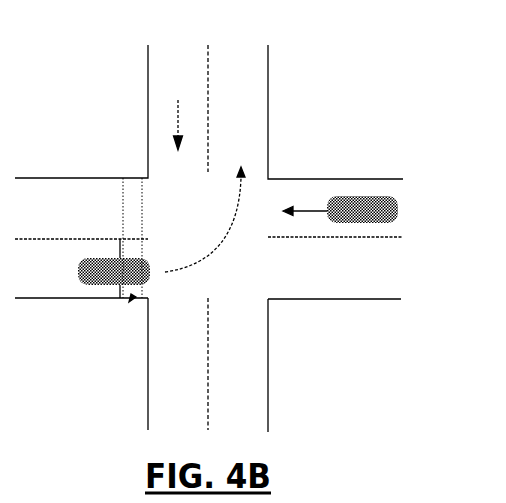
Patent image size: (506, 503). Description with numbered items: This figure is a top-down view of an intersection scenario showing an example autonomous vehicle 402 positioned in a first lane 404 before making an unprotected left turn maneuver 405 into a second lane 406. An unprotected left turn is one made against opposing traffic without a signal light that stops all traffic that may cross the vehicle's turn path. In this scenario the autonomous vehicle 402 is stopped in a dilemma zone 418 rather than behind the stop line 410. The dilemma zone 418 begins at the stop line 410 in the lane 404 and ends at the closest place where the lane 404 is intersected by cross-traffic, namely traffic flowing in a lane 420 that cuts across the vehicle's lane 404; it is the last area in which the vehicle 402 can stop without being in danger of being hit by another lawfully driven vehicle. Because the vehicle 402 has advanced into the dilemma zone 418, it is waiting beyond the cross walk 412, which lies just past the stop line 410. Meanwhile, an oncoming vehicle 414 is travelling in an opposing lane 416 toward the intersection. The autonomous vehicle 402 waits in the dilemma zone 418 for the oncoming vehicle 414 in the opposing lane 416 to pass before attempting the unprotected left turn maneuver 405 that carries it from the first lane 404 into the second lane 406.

The autonomous vehicle 402 is at (86, 258).
The first lane 404 is at (53, 280).
The unprotected left turn maneuver 405 is at (212, 248).
The second lane 406 is at (257, 113).
The stop line 410 is at (118, 238).
The cross walk 412 is at (133, 178).
The oncoming vehicle 414 is at (366, 199).
The opposing lane 416 is at (320, 199).
The dilemma zone 418 is at (132, 298).
The lane 420 is at (192, 76).